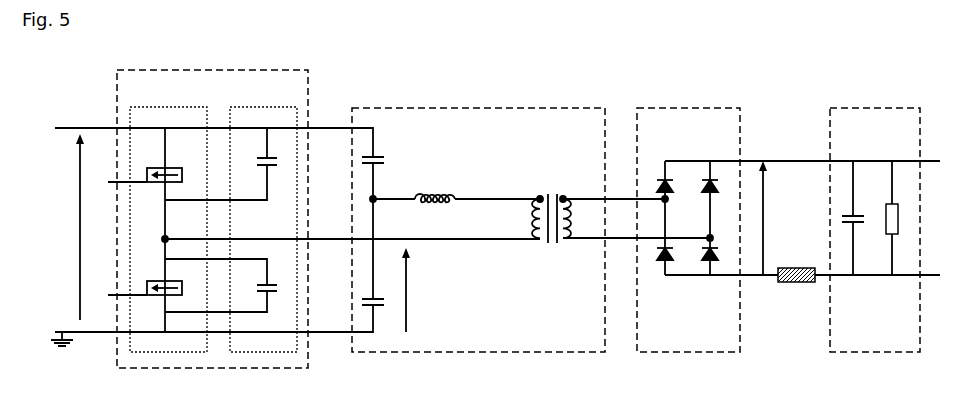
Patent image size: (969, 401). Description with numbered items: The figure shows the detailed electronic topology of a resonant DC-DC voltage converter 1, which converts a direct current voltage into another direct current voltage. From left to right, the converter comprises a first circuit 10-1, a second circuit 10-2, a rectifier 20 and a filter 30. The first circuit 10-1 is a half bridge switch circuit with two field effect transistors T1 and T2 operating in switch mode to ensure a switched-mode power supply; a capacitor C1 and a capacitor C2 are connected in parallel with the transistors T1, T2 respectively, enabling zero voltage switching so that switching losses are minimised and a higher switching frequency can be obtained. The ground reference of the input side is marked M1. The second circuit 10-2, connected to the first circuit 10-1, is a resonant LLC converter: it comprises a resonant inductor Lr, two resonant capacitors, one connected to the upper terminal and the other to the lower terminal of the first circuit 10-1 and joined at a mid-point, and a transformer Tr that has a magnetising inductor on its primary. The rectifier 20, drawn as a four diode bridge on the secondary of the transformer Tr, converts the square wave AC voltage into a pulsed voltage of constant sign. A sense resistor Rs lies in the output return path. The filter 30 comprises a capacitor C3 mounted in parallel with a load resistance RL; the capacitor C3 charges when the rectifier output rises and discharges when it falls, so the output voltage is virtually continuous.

The resonant DC-DC voltage converter 1 is at (84, 78).
The first circuit 10-1 is at (295, 212).
The second circuit 10-2 is at (531, 222).
The rectifier 20 is at (788, 222).
The filter 30 is at (875, 222).
The transistor T1 is at (145, 167).
The transistor T2 is at (145, 280).
The capacitor C1 is at (223, 164).
The capacitor C2 is at (223, 285).
The resonant inductor Lr is at (456, 205).
The transformer Tr is at (621, 212).
The sense resistor Rs is at (796, 284).
The capacitor C3 is at (856, 218).
The load resistor RL is at (898, 218).
The ground node M1 is at (62, 348).